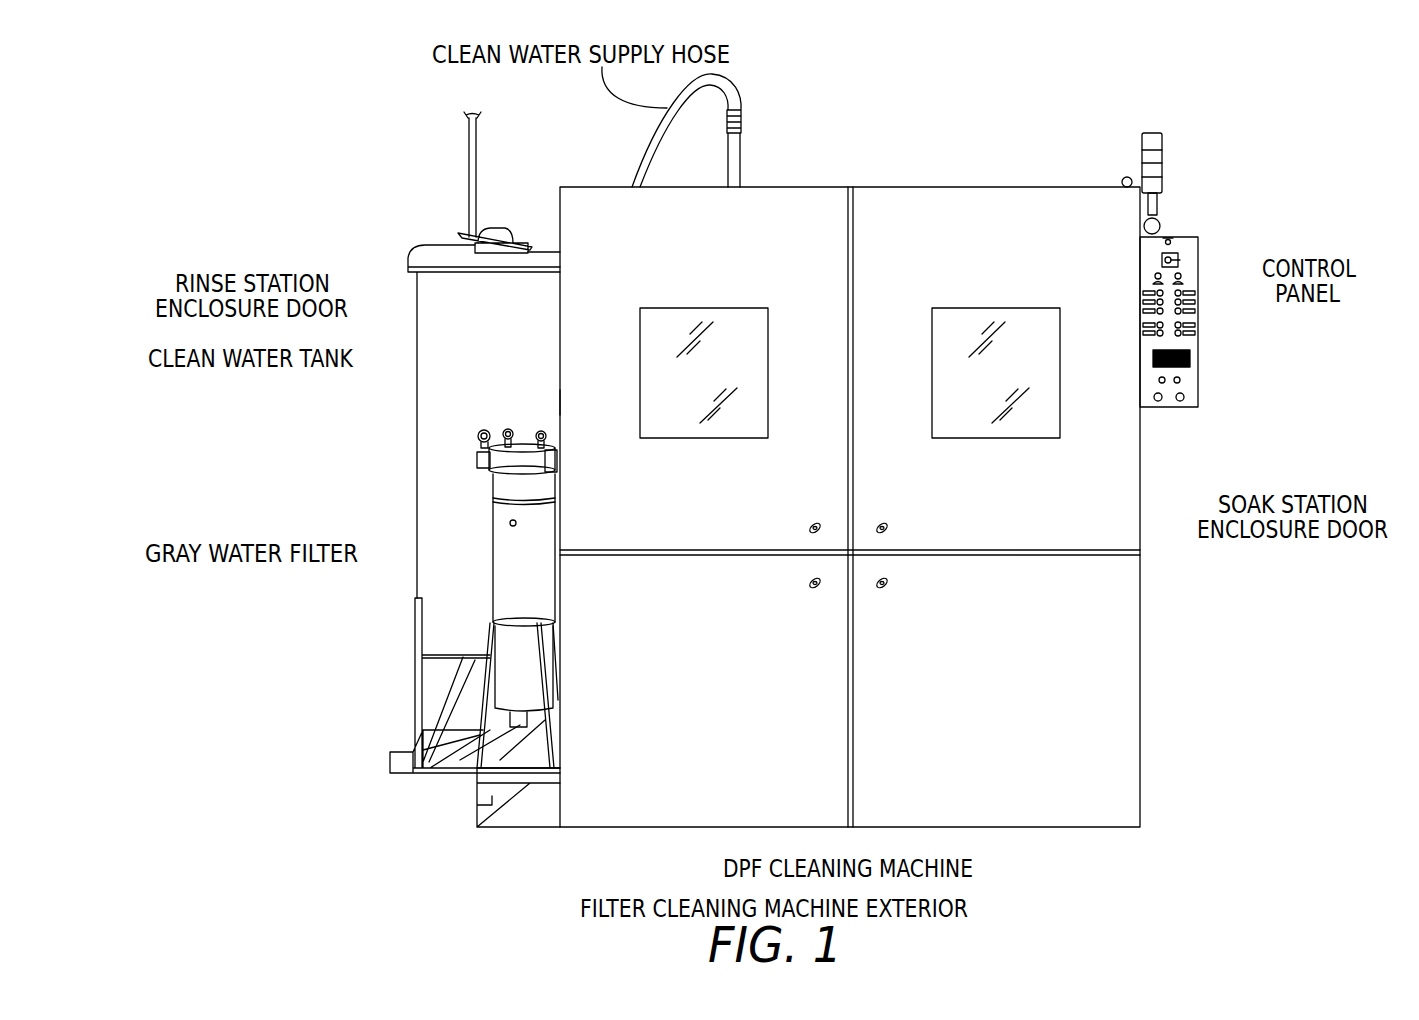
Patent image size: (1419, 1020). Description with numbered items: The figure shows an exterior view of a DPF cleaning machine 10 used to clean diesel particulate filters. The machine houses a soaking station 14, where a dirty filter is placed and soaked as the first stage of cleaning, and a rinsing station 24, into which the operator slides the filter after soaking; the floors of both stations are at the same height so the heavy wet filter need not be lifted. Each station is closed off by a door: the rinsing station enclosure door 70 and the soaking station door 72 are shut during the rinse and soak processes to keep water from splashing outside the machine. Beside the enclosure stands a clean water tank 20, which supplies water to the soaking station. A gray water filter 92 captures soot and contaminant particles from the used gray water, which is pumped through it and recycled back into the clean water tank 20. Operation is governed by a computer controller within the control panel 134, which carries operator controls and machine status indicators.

The DPF cleaning machine 10 is at (809, 474).
The soaking station 14 is at (1140, 462).
The clean water tank 20 is at (457, 355).
The rinsing station 24 is at (560, 401).
The rinsing station enclosure door 70 is at (593, 297).
The soaking station door 72 is at (1073, 517).
The gray water filter 92 is at (520, 549).
The control panel 134 is at (1193, 277).